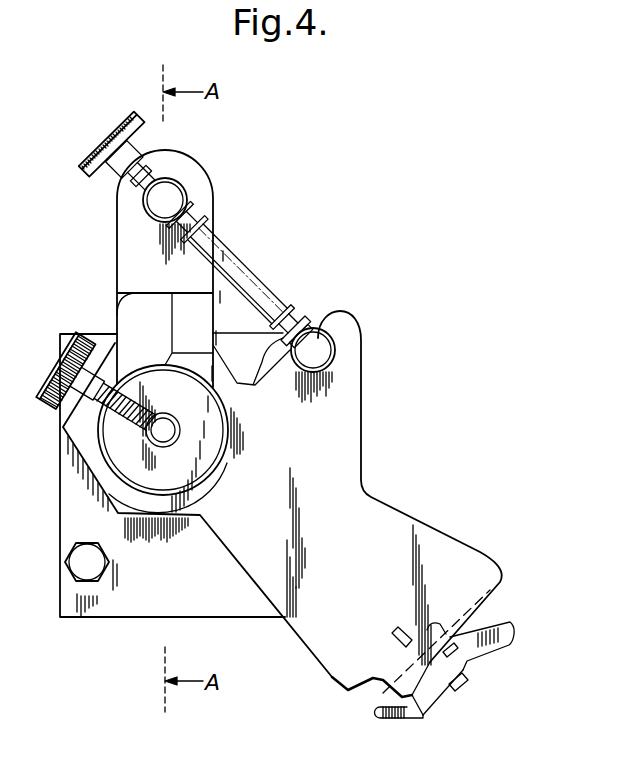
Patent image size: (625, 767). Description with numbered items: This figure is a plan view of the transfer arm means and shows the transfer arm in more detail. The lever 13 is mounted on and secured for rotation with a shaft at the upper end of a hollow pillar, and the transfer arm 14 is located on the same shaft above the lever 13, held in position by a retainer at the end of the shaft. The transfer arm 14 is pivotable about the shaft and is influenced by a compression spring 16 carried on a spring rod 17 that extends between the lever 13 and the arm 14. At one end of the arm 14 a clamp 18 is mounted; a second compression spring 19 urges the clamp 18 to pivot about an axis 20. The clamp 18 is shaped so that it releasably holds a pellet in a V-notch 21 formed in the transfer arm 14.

The lever 13 is at (133, 241).
The transfer arm 14 is at (323, 417).
The compression spring 16 is at (213, 207).
The spring rod 17 is at (226, 264).
The clamp 18 is at (432, 700).
The compression spring 19 is at (503, 593).
The axis 20 is at (364, 723).
The V-notch 21 is at (348, 692).